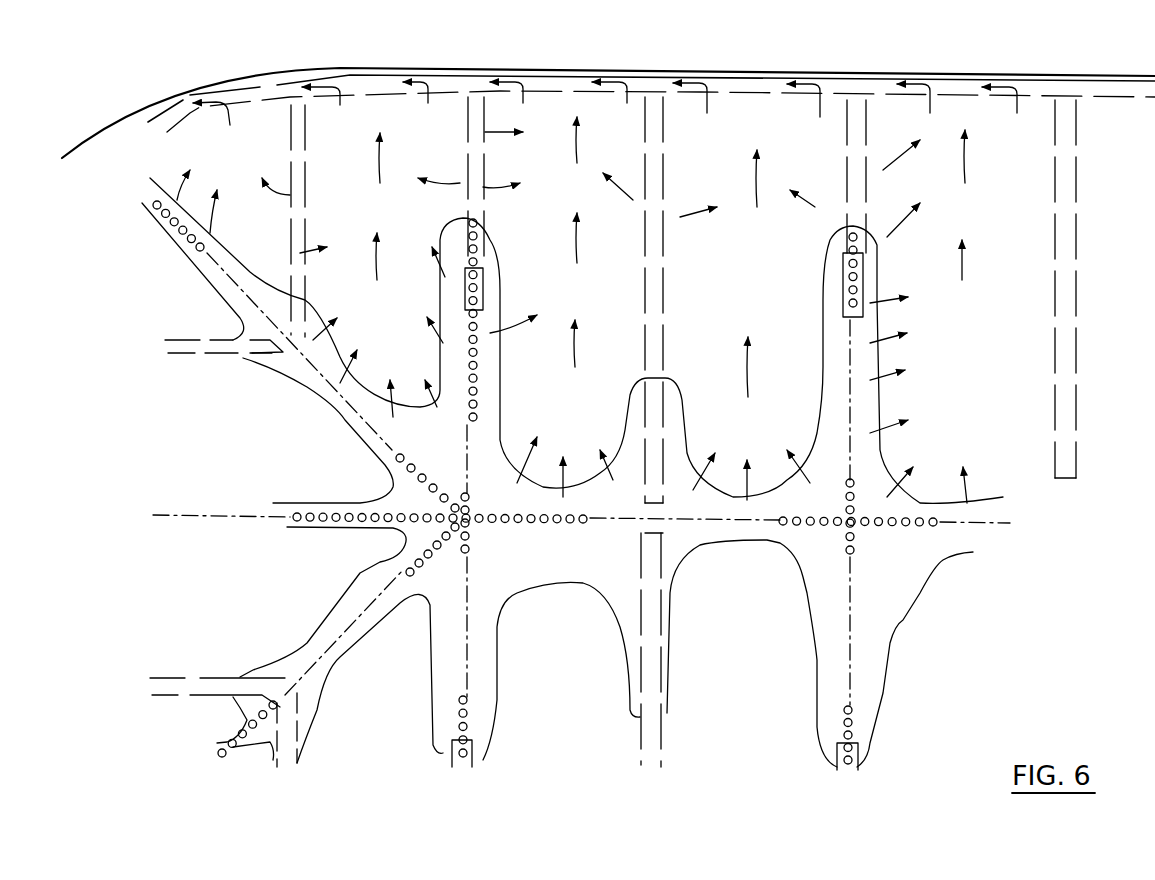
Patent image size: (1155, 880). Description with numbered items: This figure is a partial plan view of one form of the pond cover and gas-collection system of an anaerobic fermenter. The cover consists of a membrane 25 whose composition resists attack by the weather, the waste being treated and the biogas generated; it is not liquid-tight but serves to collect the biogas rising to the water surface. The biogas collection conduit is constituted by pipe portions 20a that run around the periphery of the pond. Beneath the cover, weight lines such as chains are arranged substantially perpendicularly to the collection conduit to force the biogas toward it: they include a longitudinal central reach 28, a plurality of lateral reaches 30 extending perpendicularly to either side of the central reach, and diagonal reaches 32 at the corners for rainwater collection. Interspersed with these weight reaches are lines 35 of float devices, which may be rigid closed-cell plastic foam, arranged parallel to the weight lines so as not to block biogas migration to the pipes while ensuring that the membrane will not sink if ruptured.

The pipe portions 20a is at (838, 95).
The membrane 25 is at (1037, 105).
The longitudinal central reach 28 is at (810, 527).
The lateral reaches 30 is at (480, 288).
The diagonal reaches 32 is at (397, 458).
The lines of float devices 35 is at (307, 197).